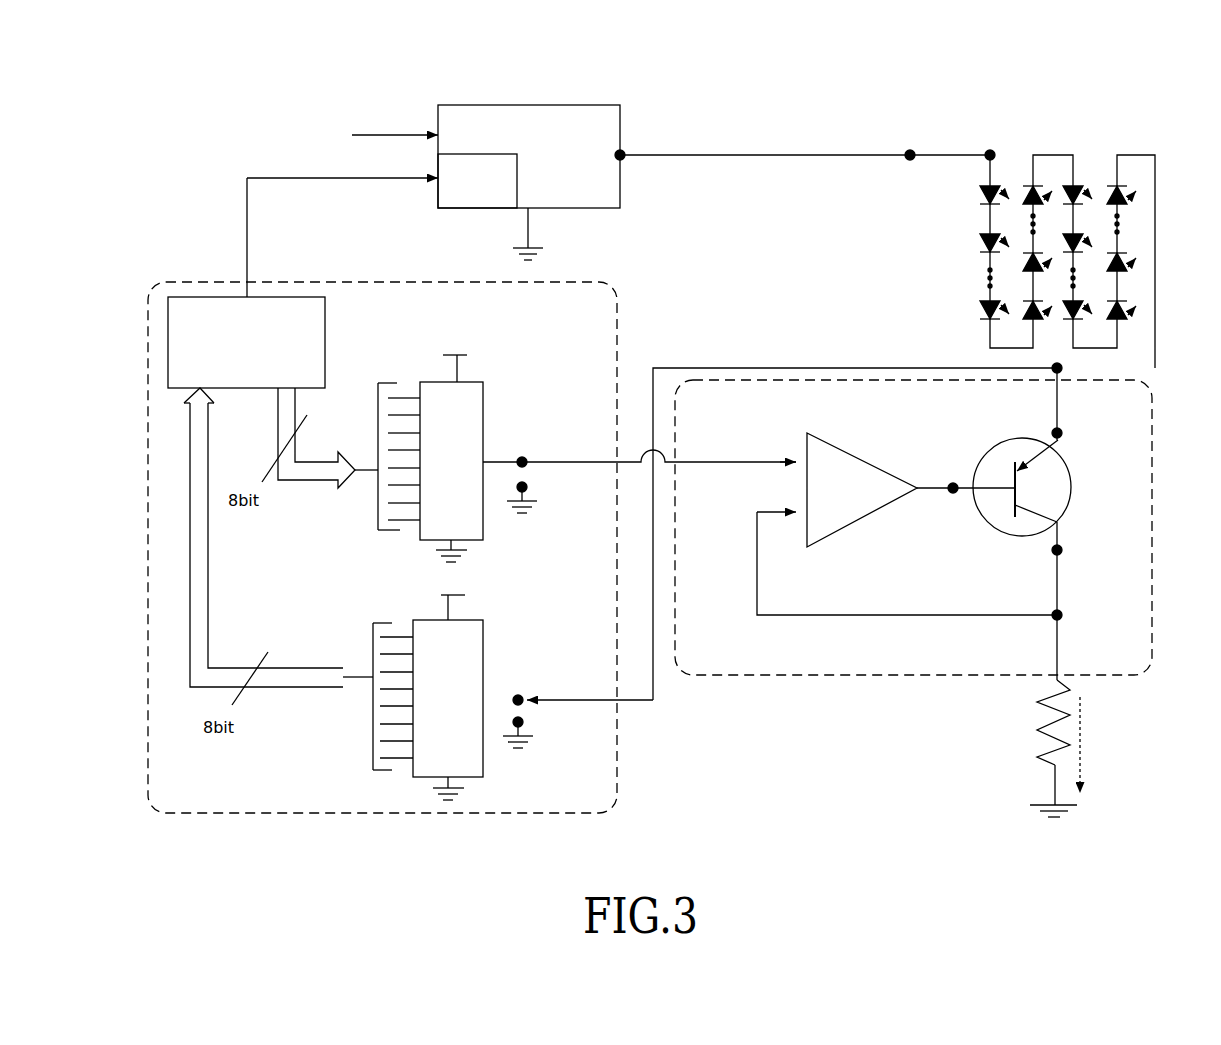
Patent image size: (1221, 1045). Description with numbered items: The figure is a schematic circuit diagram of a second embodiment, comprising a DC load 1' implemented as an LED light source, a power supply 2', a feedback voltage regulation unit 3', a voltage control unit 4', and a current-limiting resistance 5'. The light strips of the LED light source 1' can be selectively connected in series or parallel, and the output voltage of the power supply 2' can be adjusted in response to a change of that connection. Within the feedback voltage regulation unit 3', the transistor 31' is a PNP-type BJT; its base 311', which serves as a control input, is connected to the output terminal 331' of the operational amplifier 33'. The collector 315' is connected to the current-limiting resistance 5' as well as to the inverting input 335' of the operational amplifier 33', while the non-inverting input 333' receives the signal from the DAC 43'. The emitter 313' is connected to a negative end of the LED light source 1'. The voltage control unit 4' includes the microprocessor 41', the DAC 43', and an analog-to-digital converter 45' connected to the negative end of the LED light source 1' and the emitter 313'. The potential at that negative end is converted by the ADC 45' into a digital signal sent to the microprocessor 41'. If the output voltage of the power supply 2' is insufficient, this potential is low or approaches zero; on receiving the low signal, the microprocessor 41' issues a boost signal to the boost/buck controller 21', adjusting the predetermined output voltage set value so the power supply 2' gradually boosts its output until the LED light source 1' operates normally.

The DC load 1' is at (1068, 232).
The power supply 2' is at (618, 158).
The boost/buck controller 21' is at (450, 210).
The feedback voltage regulation unit 3' is at (948, 516).
The transistor 31' is at (1049, 501).
The base 311' is at (940, 455).
The emitter 313' is at (1026, 404).
The collector 315' is at (1088, 601).
The operational amplifier 33' is at (862, 476).
The output terminal 331' is at (950, 522).
The non-inverting input 333' is at (768, 429).
The inverting input 335' is at (782, 547).
The voltage control unit 4' is at (412, 528).
The microprocessor 41' is at (272, 342).
The DAC 43' is at (461, 448).
The analog-to-digital converter 45' is at (459, 686).
The current-limiting resistance 5' is at (1037, 748).